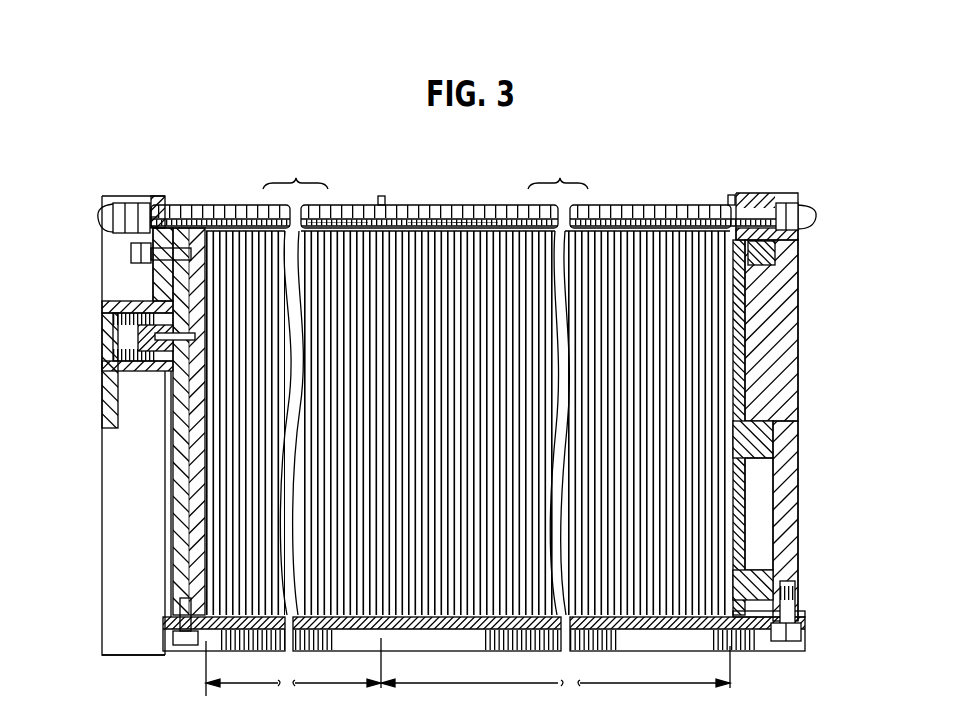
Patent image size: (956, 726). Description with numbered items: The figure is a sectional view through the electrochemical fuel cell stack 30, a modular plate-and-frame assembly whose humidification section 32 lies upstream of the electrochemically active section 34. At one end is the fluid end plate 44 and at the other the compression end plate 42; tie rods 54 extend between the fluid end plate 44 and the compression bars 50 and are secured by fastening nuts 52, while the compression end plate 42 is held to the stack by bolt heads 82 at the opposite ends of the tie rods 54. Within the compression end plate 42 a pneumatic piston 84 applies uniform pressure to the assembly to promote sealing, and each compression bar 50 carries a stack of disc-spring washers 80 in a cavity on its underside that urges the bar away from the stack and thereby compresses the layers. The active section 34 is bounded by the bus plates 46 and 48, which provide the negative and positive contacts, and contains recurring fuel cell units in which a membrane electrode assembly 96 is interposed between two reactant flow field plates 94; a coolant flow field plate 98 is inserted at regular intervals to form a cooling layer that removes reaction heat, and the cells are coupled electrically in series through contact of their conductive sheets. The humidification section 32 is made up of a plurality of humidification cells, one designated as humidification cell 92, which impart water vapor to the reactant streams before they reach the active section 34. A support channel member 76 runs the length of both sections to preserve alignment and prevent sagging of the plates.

The electrochemical fuel cell stack 30 is at (176, 656).
The humidification section 32 is at (300, 690).
The electrochemically active section 34 is at (580, 677).
The compression end plate 42 is at (758, 185).
The fluid end plate 44 is at (183, 217).
The bus plate 46 is at (370, 189).
The bus plate 48 is at (719, 187).
The compression bar 50 is at (103, 260).
The fastening nut 52 is at (95, 208).
The tie rod 54 is at (174, 217).
The support channel member 76 is at (733, 630).
The disc-spring washer 80 is at (108, 348).
The bolt head 82 is at (799, 193).
The pneumatic piston 84 is at (764, 257).
The humidification cell 92 is at (335, 232).
The reactant flow field plate 94 is at (418, 230).
The membrane electrode assembly 96 is at (432, 230).
The coolant flow field plate 98 is at (447, 230).